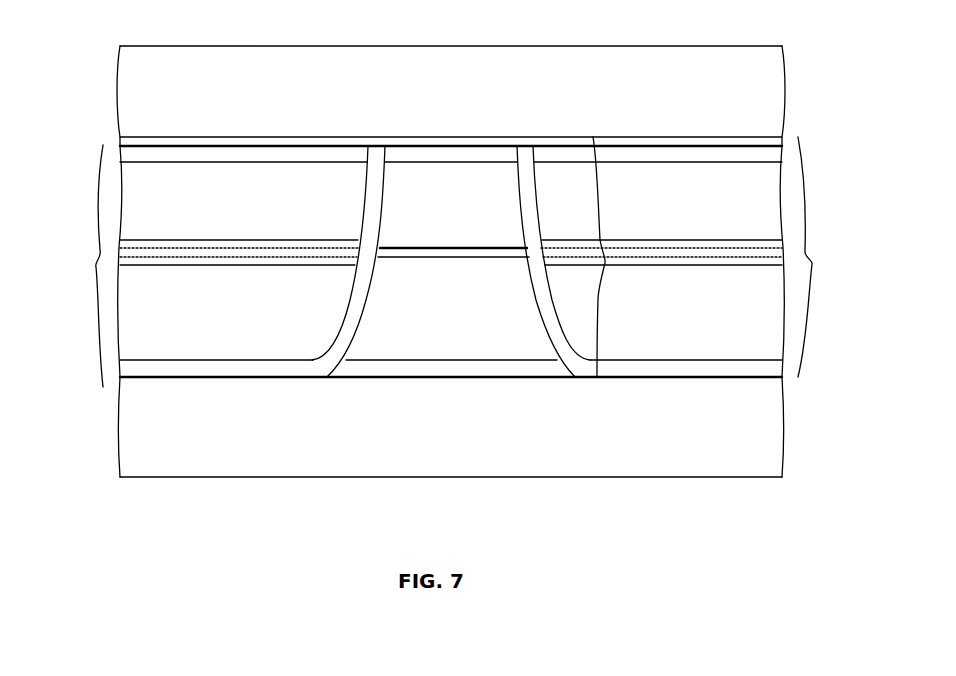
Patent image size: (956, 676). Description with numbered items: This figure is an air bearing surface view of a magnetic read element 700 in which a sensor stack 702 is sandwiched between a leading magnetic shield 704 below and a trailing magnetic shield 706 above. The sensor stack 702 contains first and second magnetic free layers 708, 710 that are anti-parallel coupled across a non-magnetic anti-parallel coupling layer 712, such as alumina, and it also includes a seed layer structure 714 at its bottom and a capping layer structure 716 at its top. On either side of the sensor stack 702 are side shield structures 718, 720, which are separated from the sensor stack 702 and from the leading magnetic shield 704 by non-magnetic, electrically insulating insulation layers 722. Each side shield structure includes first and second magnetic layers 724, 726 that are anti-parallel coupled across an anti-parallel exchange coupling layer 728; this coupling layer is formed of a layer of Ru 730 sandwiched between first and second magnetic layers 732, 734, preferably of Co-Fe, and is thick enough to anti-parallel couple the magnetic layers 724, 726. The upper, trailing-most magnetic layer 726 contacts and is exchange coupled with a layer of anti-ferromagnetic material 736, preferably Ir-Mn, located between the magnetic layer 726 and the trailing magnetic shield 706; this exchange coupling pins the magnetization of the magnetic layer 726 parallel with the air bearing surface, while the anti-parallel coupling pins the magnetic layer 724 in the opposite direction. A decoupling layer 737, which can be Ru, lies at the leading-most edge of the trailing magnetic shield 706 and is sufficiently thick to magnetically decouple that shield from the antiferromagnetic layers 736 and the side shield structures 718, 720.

The magnetic read element 700 is at (522, 47).
The sensor stack 702 is at (600, 178).
The leading magnetic shield 704 is at (492, 427).
The trailing magnetic shield 706 is at (490, 88).
The first magnetic free layer 708 is at (492, 300).
The second magnetic free layer 710 is at (490, 205).
The non-magnetic anti-parallel coupling layer 712 is at (452, 257).
The seed layer structure 714 is at (452, 363).
The capping layer structure 716 is at (432, 155).
The side shield structure 718 is at (803, 148).
The side shield structure 720 is at (100, 155).
The insulation layer 722 is at (205, 371).
The first magnetic layer 724 is at (260, 320).
The second magnetic layer 726 is at (275, 190).
The anti-parallel exchange coupling layer 728 is at (204, 266).
The layer of Ru 730 is at (120, 254).
The first magnetic layer 732 is at (120, 262).
The second magnetic layer 734 is at (120, 245).
The layer of anti-ferromagnetic material 736 is at (237, 160).
The decoupling layer 737 is at (487, 143).